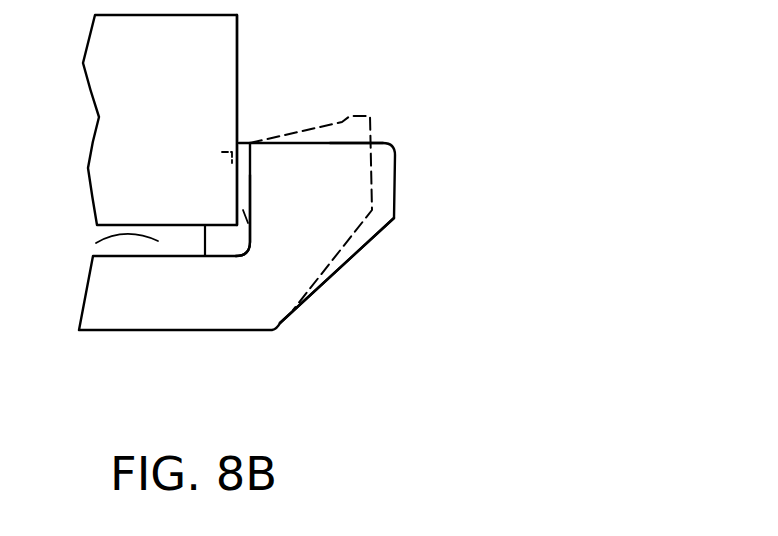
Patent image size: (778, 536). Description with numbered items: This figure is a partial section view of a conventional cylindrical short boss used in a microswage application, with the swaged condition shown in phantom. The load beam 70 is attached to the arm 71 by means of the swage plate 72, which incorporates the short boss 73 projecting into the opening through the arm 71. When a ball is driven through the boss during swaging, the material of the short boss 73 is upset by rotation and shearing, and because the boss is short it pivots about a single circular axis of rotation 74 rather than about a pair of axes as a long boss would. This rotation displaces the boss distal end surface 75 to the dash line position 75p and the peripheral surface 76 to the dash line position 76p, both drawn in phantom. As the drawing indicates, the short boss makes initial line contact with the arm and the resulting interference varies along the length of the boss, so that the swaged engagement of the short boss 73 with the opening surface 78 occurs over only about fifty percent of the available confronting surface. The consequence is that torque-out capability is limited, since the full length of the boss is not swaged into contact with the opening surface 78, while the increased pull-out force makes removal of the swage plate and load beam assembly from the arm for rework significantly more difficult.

The load beam 70 is at (102, 238).
The arm 71 is at (147, 147).
The swage plate 72 is at (148, 297).
The short boss 73 is at (395, 155).
The circular axis of rotation 74 is at (292, 258).
The boss distal end surface 75 is at (340, 142).
The dash line position of distal end surface 75p is at (304, 130).
The peripheral surface 76 is at (250, 189).
The dash line position of peripheral surface 76p is at (233, 183).
The opening surface 78 is at (237, 78).